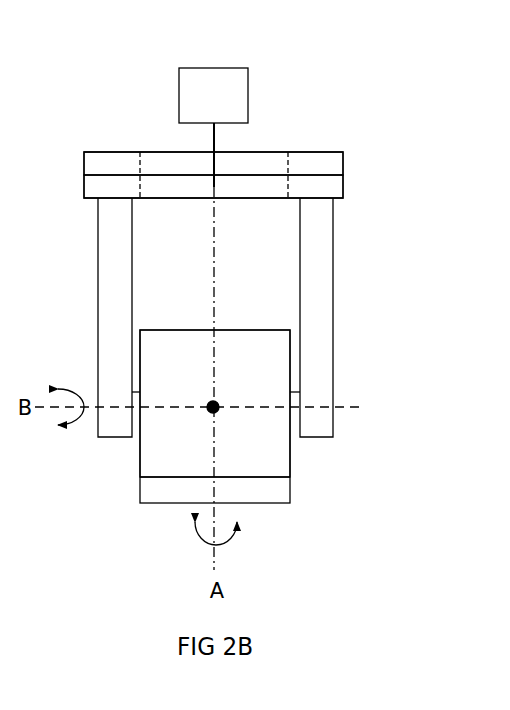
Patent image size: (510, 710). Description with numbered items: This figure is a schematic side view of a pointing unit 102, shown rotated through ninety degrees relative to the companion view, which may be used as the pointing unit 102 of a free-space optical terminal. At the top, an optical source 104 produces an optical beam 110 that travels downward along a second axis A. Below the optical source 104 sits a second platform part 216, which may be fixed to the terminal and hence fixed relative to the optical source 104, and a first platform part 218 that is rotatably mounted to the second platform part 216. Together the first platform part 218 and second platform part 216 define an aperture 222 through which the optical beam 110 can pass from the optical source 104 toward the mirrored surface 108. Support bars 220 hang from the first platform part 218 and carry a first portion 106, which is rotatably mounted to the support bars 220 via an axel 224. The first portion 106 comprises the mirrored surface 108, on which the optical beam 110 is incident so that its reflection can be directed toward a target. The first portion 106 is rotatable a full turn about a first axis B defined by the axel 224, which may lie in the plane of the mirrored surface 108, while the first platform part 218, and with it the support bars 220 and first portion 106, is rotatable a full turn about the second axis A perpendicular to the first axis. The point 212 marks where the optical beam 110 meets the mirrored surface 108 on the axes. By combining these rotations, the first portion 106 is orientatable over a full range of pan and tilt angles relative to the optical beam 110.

The pointing unit 102 is at (72, 120).
The optical source 104 is at (250, 90).
The first portion 106 is at (140, 452).
The mirrored surface 108 is at (272, 340).
The optical beam 110 is at (217, 136).
The pivot point 212 is at (216, 411).
The second platform part 216 is at (345, 166).
The first platform part 218 is at (345, 191).
The support bars 220 is at (98, 288).
The aperture 222 is at (232, 197).
The axel 224 is at (296, 437).